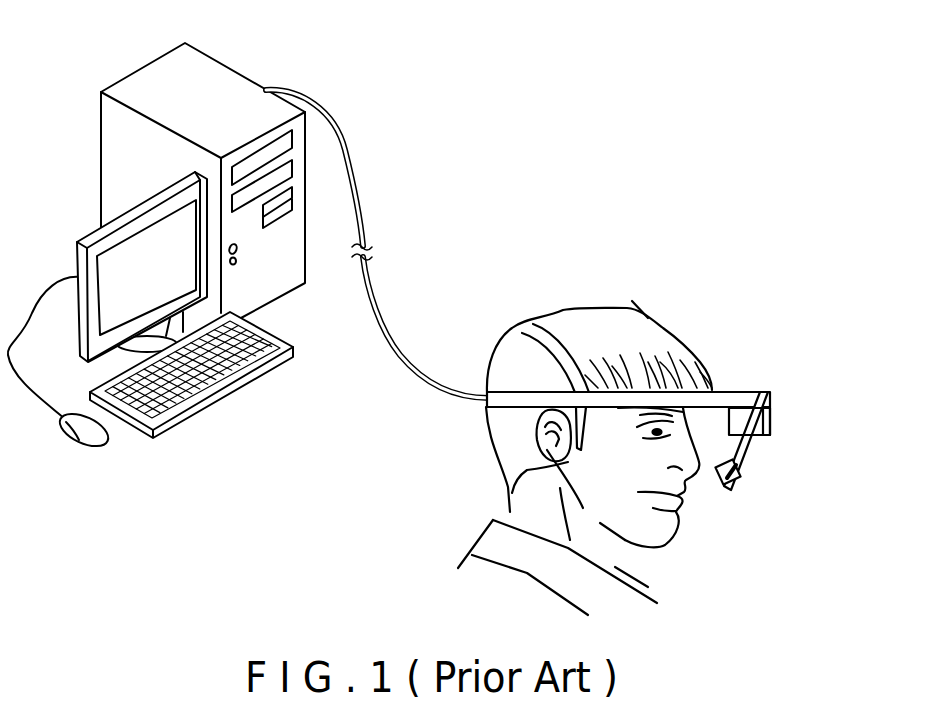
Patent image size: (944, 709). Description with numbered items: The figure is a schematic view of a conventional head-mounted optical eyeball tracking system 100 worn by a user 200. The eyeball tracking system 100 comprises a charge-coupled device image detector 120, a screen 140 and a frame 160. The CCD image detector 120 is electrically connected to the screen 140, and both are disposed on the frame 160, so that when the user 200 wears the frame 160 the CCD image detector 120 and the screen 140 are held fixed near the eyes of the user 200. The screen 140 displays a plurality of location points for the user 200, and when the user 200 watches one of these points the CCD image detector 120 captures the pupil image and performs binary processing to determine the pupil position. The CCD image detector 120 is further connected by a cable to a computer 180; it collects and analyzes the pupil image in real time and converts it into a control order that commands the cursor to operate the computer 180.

The head-mounted optical eyeball tracking system 100 is at (676, 381).
The CCD image detector 120 is at (740, 470).
The screen 140 is at (770, 417).
The frame 160 is at (722, 398).
The computer 180 is at (203, 67).
The user 200 is at (517, 509).